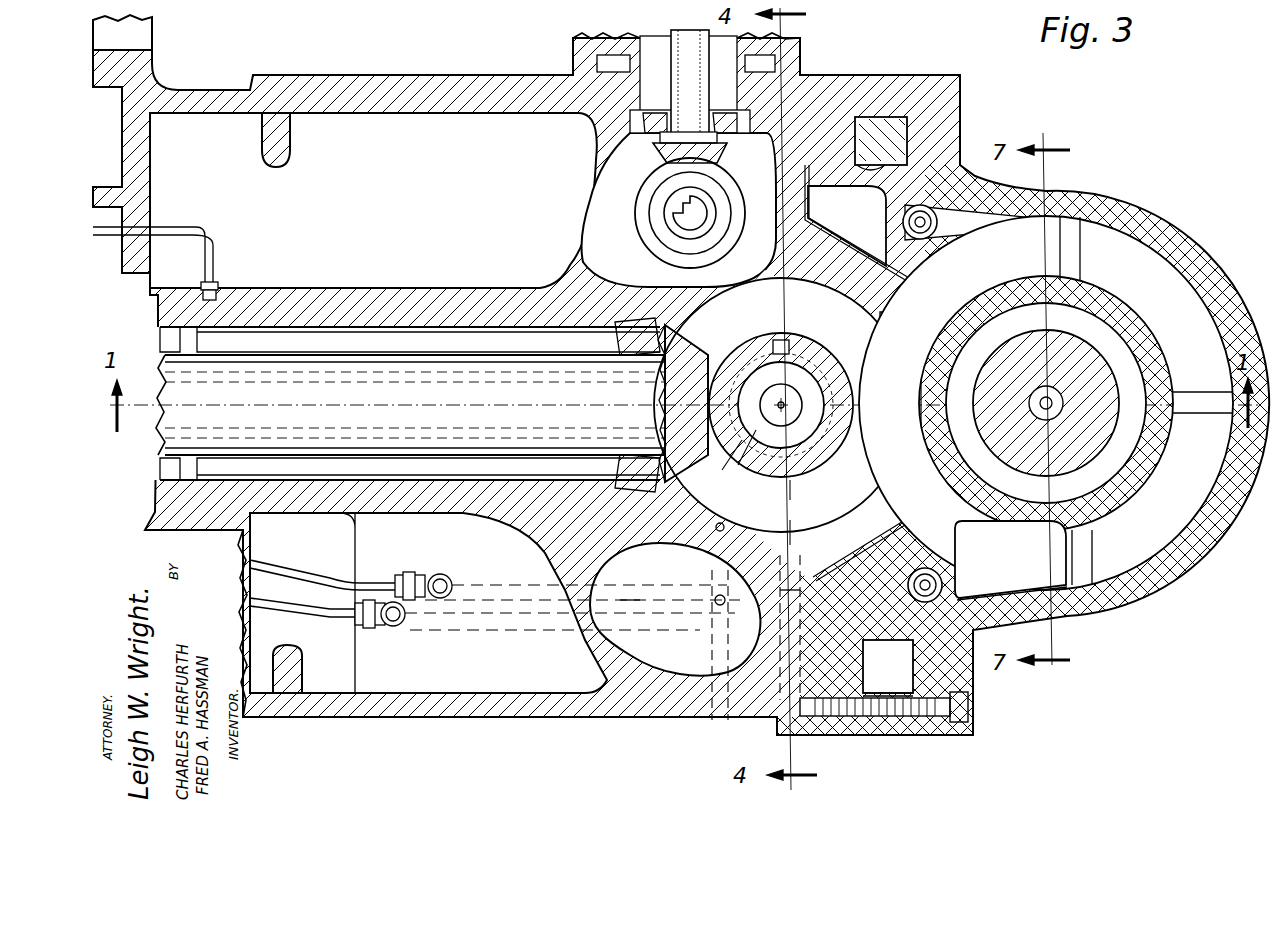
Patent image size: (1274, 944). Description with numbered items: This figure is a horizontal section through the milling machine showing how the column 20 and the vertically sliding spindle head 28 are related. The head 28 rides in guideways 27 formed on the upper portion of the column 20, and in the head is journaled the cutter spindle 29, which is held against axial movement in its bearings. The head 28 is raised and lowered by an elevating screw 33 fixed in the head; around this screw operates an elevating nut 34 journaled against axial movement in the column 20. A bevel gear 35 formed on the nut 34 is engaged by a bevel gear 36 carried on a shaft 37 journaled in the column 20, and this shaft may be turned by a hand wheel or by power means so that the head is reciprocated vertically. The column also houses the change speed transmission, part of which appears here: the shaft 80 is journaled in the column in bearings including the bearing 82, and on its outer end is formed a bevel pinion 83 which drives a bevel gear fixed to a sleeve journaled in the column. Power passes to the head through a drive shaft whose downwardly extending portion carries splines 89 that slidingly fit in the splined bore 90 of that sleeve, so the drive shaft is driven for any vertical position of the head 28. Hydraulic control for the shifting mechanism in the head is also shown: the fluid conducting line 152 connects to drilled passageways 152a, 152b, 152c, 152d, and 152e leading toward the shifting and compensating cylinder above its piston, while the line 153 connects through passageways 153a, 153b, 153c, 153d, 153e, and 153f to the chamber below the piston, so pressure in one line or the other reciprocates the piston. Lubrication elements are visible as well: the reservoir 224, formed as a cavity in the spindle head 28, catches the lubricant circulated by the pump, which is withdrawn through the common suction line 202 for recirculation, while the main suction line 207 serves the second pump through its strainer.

The column 20 is at (842, 76).
The guideways 27 is at (860, 168).
The spindle head 28 is at (1150, 232).
The cutter spindle 29 is at (1046, 403).
The elevating screw 33 is at (688, 213).
The elevating nut 34 is at (662, 196).
The bevel gear 35 is at (628, 213).
The bevel gear 36 is at (662, 150).
The shaft 37 is at (690, 81).
The shaft 80 is at (410, 405).
The bearing 82 is at (632, 330).
The bevel pinion 83 is at (700, 349).
The splines 89 is at (792, 348).
The splined bore 90 is at (832, 384).
The fluid conducting line 152 is at (320, 614).
The drilled passageway 152a is at (388, 626).
The drilled passageway 152b is at (658, 625).
The drilled passageway 152c is at (790, 585).
The drilled passageway 152d is at (792, 520).
The drilled passageway 152e is at (792, 490).
The fluid conducting line 153 is at (300, 578).
The passageway 153a is at (438, 574).
The passageway 153b is at (636, 598).
The passageway 153c is at (720, 590).
The passageway 153d is at (716, 528).
The passageway 153e is at (748, 450).
The passageway 153f is at (740, 452).
The common suction line 202 is at (938, 224).
The main suction line 207 is at (943, 583).
The reservoir 224 is at (1192, 358).